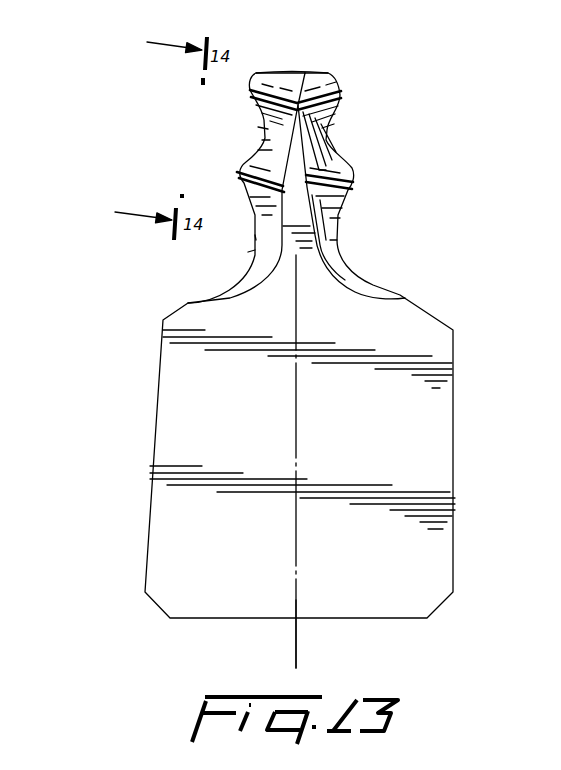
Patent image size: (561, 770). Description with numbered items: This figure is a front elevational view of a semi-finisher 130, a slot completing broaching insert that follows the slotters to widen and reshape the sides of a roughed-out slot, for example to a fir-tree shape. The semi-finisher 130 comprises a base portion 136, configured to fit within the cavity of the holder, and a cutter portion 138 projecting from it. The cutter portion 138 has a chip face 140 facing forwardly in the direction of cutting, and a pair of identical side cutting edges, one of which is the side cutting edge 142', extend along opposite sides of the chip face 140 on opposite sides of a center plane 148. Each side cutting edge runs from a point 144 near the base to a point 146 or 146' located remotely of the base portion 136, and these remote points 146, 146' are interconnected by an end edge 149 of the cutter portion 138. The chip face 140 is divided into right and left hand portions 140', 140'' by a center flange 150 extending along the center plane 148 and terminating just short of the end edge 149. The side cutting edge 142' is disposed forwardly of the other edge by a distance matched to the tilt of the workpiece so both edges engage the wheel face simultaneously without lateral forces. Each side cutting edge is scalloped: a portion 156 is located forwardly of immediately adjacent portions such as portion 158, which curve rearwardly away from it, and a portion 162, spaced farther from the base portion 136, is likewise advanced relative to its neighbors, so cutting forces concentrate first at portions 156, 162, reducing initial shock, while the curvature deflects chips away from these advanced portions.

The semi-finisher 130 is at (445, 280).
The base portion 136 is at (142, 473).
The cutter portion 138 is at (362, 193).
The chip face 140 is at (194, 190).
The right hand portion of chip face 140' is at (189, 252).
The left hand portion of chip face 140'' is at (375, 245).
The side cutting edge 142' is at (362, 134).
The point 144 is at (253, 250).
The point 146 is at (275, 40).
The point 146' is at (348, 50).
The center plane 148 is at (308, 645).
The end edge 149 is at (305, 73).
The center flange 150 is at (305, 218).
The forwardly advanced portion of side cutting edge 156 is at (238, 172).
The adjacent portion of side cutting edge 158 is at (263, 156).
The forwardly advanced portion of cutting edge 162 is at (252, 92).